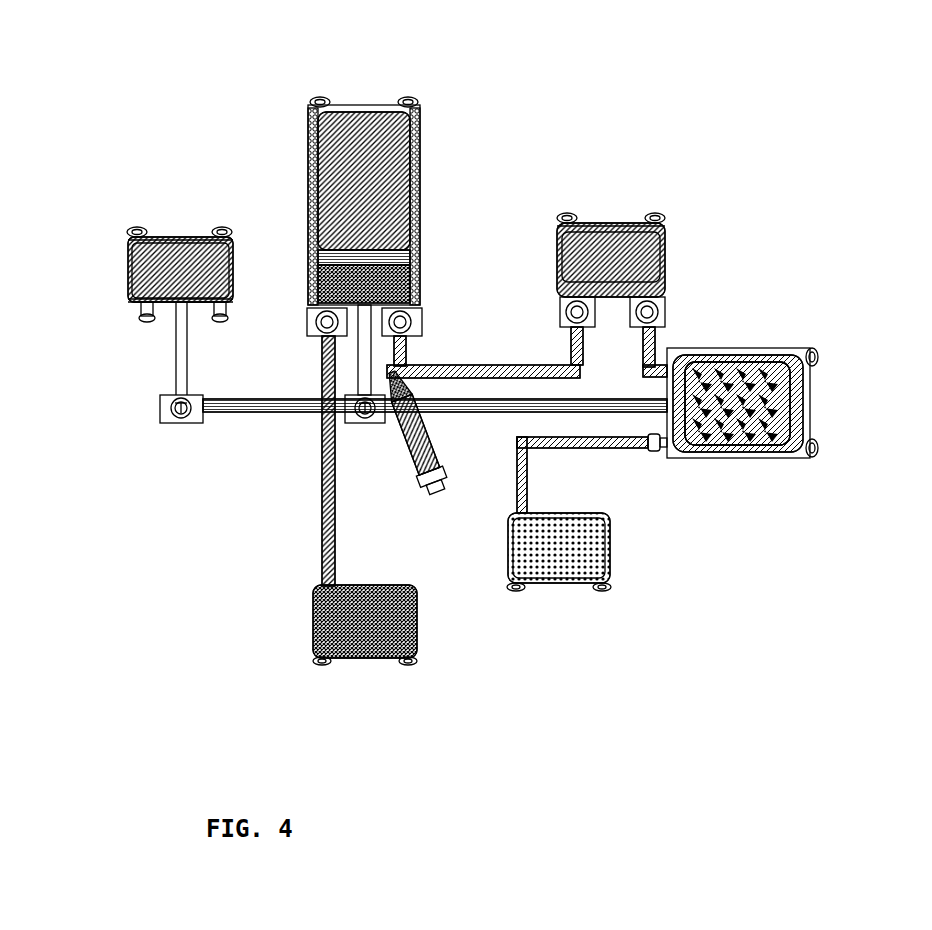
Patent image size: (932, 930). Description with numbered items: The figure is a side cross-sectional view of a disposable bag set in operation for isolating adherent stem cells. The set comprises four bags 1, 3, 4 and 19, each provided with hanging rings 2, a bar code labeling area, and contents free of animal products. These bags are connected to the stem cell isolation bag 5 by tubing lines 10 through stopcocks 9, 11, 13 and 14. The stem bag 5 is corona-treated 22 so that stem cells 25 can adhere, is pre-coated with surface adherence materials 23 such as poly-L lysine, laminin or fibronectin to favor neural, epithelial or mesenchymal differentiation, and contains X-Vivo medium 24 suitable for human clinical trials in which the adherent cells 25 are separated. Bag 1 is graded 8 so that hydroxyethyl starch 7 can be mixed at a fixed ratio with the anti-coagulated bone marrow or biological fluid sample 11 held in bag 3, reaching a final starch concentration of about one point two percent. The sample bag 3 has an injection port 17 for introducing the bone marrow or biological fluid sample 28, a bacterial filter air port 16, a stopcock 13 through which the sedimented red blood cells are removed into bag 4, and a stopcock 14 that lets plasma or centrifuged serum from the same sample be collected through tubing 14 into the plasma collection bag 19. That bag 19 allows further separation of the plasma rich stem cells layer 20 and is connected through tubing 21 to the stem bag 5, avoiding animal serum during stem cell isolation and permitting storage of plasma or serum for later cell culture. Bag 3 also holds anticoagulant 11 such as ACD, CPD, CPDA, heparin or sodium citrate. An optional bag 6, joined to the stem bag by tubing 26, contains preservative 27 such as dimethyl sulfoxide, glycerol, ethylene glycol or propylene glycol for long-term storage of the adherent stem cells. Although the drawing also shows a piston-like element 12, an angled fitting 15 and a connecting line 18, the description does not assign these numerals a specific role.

The bag 1 is at (178, 235).
The hanging rings 2 is at (135, 228).
The sample bag 3 is at (416, 270).
The bag 4 is at (365, 665).
The stem cell isolation bag 5 is at (785, 406).
The optional bag 6 is at (563, 590).
The hydroxyethyl starch (HES) 7 is at (122, 262).
The grading 8 is at (132, 303).
The stopcock 9 is at (180, 425).
The tubing lines 10 is at (268, 418).
The anticoagulant / anti-coagulated sample 11 is at (405, 185).
The piston 12 is at (417, 225).
The stopcock 13 is at (322, 370).
The stopcock / tubing 14 is at (372, 362).
The angled cylinder 15 is at (470, 378).
The bacterial filter air port 16 is at (308, 318).
The injection port 17 is at (421, 314).
The connecting pipe 18 is at (510, 363).
The plasma collection bag 19 is at (610, 222).
The plasma rich stem cells layer 20 is at (642, 282).
The tubing 21 is at (661, 348).
The corona treatment 22 is at (740, 360).
The surface adherence materials 23 is at (790, 350).
The X-Vivo medium 24 is at (795, 458).
The adherent stem cells 25 is at (728, 437).
The tubing 26 is at (648, 450).
The preservative 27 is at (530, 543).
The BM or biological fluid sample 28 is at (424, 495).